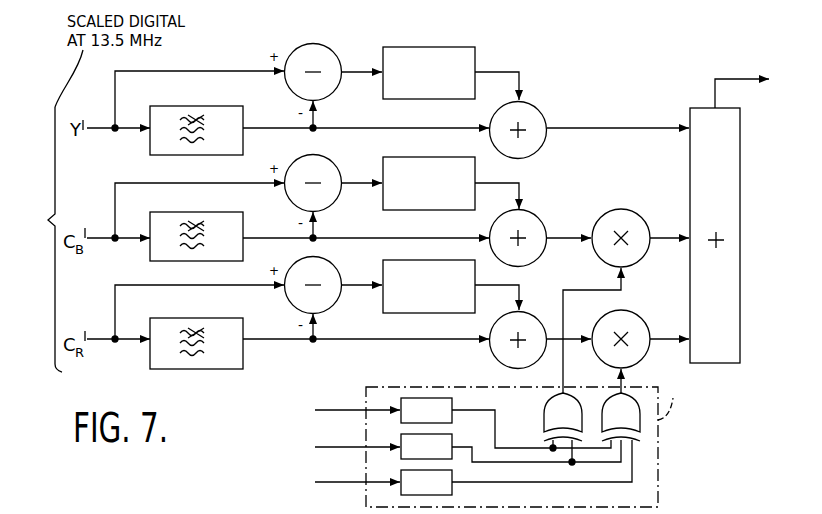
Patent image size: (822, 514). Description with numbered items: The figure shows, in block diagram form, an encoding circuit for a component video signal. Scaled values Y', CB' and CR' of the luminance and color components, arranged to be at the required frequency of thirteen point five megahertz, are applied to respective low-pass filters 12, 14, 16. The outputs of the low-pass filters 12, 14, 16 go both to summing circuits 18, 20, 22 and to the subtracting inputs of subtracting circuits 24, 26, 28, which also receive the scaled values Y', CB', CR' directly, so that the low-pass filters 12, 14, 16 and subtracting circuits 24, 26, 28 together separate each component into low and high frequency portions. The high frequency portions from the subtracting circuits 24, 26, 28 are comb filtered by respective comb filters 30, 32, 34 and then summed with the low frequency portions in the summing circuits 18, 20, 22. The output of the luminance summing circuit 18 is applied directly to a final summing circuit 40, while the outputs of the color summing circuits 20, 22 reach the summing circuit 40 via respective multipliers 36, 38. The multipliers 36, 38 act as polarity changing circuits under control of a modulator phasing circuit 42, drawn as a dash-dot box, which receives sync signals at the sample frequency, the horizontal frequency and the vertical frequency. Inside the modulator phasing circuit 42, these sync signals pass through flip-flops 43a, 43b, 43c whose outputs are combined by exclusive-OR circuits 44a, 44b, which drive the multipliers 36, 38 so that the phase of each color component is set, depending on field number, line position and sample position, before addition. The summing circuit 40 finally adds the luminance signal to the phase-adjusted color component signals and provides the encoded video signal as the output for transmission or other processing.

The low-pass filter 12 is at (243, 117).
The low-pass filter 14 is at (243, 222).
The low-pass filter 16 is at (243, 328).
The summing circuit 18 is at (543, 111).
The summing circuit 20 is at (544, 217).
The summing circuit 22 is at (533, 319).
The subtracting circuit 24 is at (333, 53).
The subtracting circuit 26 is at (333, 165).
The subtracting circuit 28 is at (333, 266).
The comb filter 30 is at (475, 60).
The comb filter 32 is at (468, 173).
The comb filter 34 is at (468, 276).
The multiplier 36 is at (643, 222).
The multiplier 38 is at (643, 323).
The summing circuit 40 is at (740, 320).
The modulator phasing circuit 42 is at (662, 474).
The flip-flop 43a is at (452, 403).
The flip-flop 43b is at (452, 438).
The flip-flop 43c is at (452, 474).
The exclusive-OR circuit 44a is at (570, 392).
The exclusive-OR circuit 44b is at (636, 392).